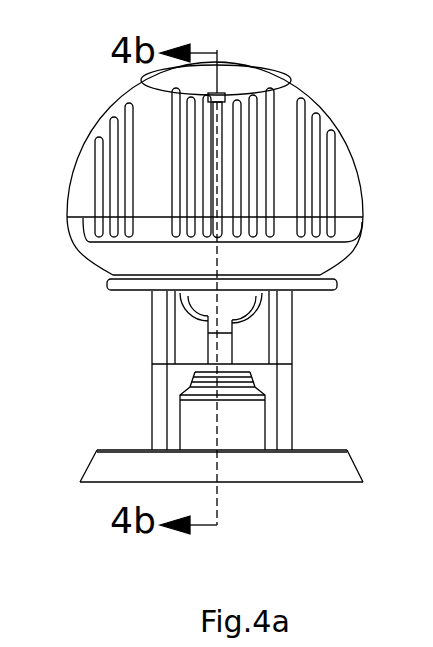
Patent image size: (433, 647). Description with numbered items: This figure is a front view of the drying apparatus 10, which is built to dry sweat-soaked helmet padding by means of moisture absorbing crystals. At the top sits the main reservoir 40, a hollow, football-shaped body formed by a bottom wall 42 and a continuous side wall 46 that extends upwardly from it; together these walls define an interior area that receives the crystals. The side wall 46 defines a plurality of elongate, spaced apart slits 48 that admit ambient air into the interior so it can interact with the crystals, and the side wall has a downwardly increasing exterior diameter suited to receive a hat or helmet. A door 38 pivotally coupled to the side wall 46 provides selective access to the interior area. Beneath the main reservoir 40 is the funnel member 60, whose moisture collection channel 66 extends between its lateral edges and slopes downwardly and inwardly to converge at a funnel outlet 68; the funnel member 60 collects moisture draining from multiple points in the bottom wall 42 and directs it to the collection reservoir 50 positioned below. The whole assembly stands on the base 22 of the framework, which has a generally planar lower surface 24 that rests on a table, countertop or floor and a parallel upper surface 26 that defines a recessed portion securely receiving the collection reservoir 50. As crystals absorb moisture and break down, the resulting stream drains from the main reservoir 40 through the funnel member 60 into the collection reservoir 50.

The drying apparatus 10 is at (322, 64).
The base 22 is at (112, 468).
The lower surface 24 is at (307, 483).
The upper surface 26 is at (107, 449).
The door 38 is at (255, 78).
The main reservoir 40 is at (93, 101).
The bottom wall 42 is at (113, 261).
The side wall 46 is at (282, 128).
The slits 48 is at (93, 186).
The collection reservoir 50 is at (247, 417).
The funnel member 60 is at (358, 283).
The moisture collection channel 66 is at (183, 308).
The funnel outlet 68 is at (233, 350).